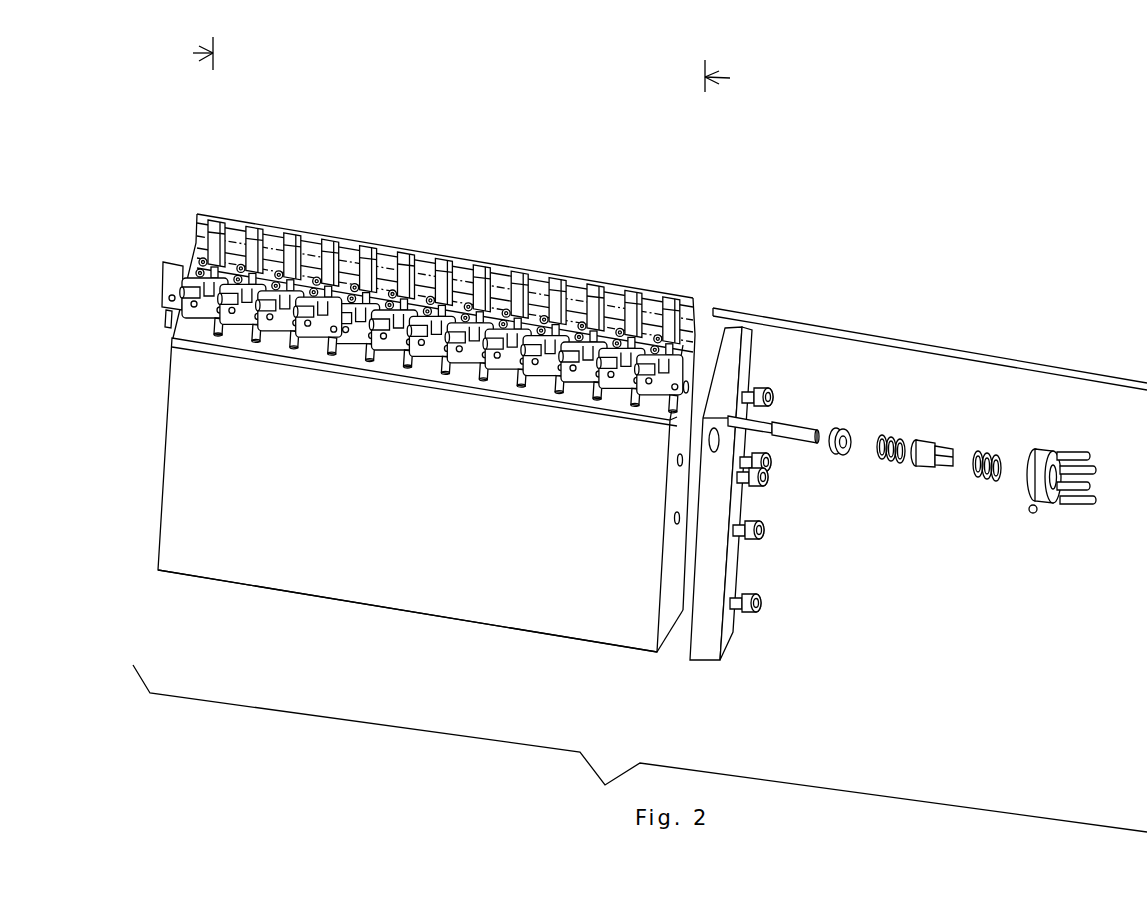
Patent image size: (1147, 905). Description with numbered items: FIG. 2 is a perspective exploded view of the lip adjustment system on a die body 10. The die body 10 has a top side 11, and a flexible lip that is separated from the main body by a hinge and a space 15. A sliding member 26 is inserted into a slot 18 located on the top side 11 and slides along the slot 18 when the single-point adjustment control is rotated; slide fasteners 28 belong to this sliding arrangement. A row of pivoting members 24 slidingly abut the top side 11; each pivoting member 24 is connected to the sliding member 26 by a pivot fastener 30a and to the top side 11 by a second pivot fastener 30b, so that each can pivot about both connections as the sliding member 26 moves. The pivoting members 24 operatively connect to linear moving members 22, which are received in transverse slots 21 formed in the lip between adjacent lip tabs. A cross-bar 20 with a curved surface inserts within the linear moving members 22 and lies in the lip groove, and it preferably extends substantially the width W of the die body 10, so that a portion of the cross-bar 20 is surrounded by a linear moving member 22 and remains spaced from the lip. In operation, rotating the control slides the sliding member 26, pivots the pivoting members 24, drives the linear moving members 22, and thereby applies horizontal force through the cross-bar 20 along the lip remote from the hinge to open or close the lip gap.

The die body 10 is at (230, 633).
The top side 11 is at (503, 396).
The space 15 is at (695, 322).
The slot 18 is at (673, 622).
The cross-bar 20 is at (925, 342).
The transverse slot 21 is at (537, 282).
The linear moving member 22 is at (677, 300).
The pivoting member 24 is at (497, 282).
The sliding member 26 is at (578, 398).
The slide fastener 28 is at (622, 300).
The pivot fastener 30a is at (218, 333).
The second pivot fastener 30b is at (327, 297).
The width W is at (705, 92).